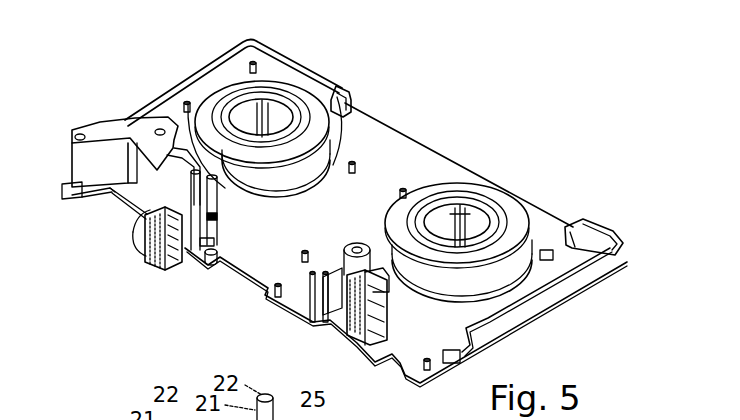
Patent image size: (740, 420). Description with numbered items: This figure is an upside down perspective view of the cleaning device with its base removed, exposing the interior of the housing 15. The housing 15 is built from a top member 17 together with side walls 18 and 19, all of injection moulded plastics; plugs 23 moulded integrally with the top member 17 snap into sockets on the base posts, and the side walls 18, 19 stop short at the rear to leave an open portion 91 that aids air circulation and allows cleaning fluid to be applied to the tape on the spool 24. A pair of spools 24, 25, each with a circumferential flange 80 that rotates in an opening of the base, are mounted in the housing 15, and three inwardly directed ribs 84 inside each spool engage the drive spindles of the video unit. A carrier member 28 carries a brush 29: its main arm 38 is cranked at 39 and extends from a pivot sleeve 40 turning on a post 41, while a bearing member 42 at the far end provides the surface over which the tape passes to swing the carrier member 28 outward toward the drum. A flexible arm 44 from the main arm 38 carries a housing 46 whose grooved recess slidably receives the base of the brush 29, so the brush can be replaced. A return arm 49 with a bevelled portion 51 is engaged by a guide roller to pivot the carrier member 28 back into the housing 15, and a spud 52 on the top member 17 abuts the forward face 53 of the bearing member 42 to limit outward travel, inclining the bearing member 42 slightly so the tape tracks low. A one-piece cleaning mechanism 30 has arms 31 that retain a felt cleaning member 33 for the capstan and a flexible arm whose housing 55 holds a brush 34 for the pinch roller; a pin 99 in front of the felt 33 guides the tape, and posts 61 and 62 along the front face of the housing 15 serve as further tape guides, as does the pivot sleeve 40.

The housing 15 is at (622, 229).
The top member 17 is at (435, 165).
The side wall 18 is at (597, 272).
The side wall 19 is at (230, 57).
The plugs 23 is at (258, 52).
The spool 24 is at (300, 88).
The spool 25 is at (503, 205).
The carrier member 28 is at (131, 104).
The brush 29 is at (148, 255).
The cleaning mechanism 30 is at (364, 228).
The arms 31 is at (338, 298).
The felt cleaning member 33 is at (324, 270).
The brush 34 is at (365, 327).
The main arm 38 is at (100, 150).
The crank 39 is at (159, 128).
The pivot sleeve 40 is at (80, 170).
The post 41 is at (76, 134).
The bearing member 42 is at (218, 218).
The flexible arm 44 is at (145, 198).
The housing 46 is at (147, 246).
The return arm 49 is at (150, 212).
The bevelled portion 51 is at (72, 195).
The spud 52 is at (198, 262).
The forward face 53 is at (188, 262).
The housing 55 is at (388, 328).
The post 61 is at (276, 300).
The post 62 is at (214, 243).
The circumferential flange 80 is at (340, 92).
The ribs 84 is at (462, 215).
The open portion 91 is at (474, 212).
The pin 99 is at (298, 297).